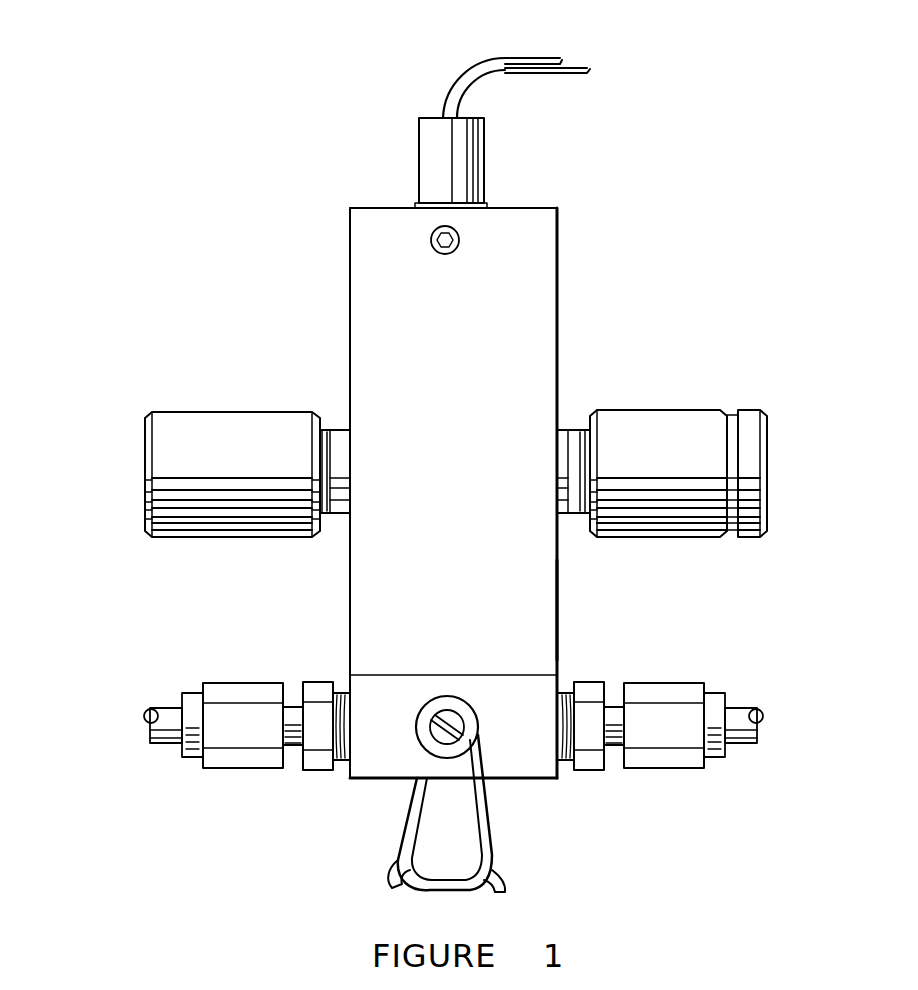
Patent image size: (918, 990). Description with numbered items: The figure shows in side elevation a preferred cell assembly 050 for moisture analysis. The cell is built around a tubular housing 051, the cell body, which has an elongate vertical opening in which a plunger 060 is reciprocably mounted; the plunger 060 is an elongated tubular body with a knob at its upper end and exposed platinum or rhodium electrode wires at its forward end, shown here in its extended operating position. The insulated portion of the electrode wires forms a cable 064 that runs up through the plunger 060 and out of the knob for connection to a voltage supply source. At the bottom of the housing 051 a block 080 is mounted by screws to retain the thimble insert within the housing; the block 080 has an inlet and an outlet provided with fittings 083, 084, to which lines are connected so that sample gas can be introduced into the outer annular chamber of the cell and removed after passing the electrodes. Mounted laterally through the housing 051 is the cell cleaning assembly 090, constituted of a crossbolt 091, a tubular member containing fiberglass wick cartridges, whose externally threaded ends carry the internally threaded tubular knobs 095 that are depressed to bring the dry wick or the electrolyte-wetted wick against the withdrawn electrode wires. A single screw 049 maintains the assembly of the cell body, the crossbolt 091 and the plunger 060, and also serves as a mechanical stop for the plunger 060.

The screw 049 is at (459, 240).
The cell assembly 050 is at (560, 327).
The tubular housing 051 is at (558, 612).
The plunger 060 is at (486, 161).
The cable 064 is at (460, 78).
The block 080 is at (520, 780).
The fitting 083 is at (220, 768).
The fitting 084 is at (670, 768).
The cell cleaning assembly 090 is at (615, 410).
The crossbolt 091 is at (340, 430).
The tubular knobs 095 is at (173, 412).